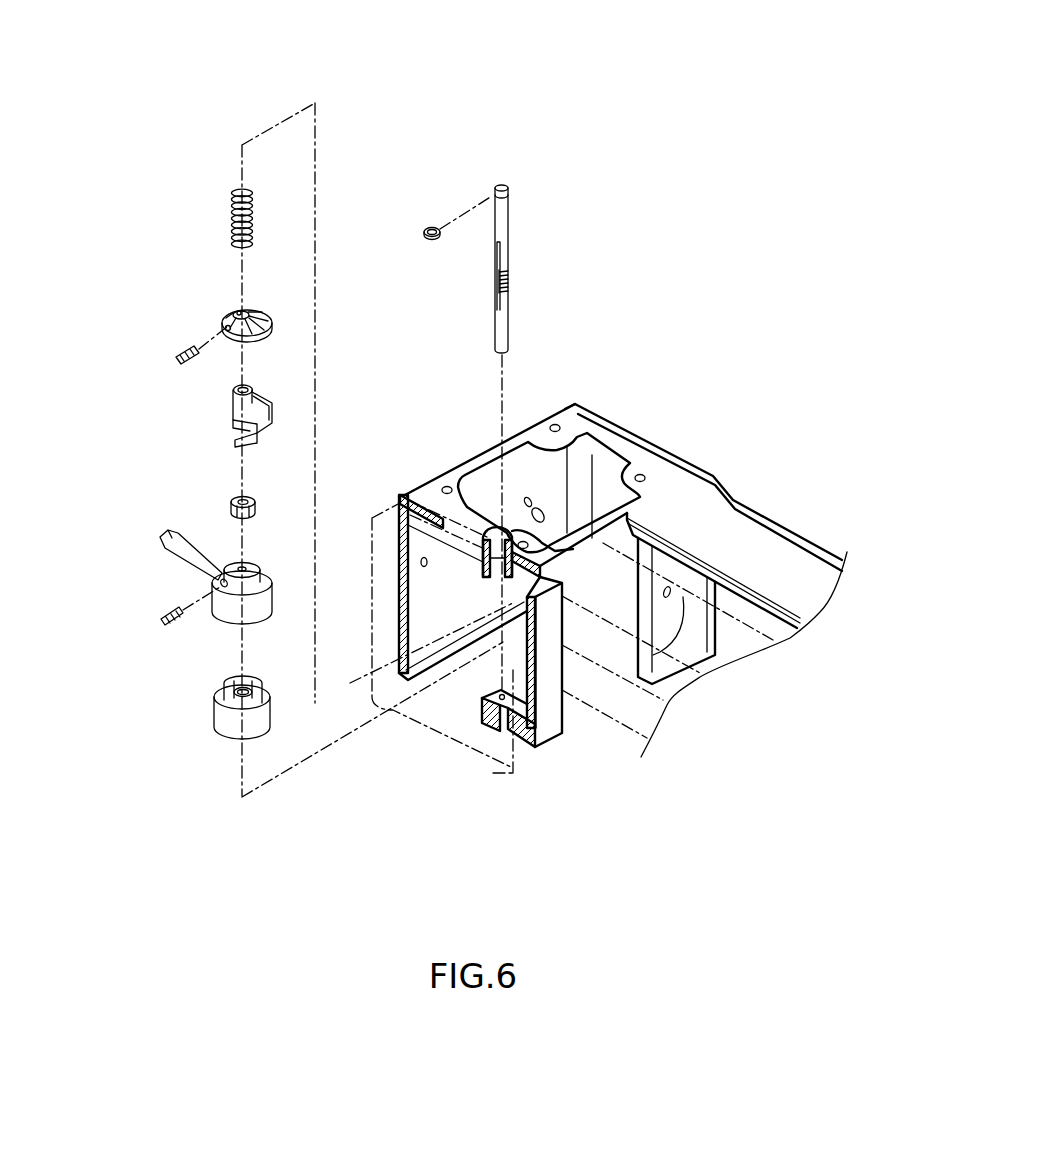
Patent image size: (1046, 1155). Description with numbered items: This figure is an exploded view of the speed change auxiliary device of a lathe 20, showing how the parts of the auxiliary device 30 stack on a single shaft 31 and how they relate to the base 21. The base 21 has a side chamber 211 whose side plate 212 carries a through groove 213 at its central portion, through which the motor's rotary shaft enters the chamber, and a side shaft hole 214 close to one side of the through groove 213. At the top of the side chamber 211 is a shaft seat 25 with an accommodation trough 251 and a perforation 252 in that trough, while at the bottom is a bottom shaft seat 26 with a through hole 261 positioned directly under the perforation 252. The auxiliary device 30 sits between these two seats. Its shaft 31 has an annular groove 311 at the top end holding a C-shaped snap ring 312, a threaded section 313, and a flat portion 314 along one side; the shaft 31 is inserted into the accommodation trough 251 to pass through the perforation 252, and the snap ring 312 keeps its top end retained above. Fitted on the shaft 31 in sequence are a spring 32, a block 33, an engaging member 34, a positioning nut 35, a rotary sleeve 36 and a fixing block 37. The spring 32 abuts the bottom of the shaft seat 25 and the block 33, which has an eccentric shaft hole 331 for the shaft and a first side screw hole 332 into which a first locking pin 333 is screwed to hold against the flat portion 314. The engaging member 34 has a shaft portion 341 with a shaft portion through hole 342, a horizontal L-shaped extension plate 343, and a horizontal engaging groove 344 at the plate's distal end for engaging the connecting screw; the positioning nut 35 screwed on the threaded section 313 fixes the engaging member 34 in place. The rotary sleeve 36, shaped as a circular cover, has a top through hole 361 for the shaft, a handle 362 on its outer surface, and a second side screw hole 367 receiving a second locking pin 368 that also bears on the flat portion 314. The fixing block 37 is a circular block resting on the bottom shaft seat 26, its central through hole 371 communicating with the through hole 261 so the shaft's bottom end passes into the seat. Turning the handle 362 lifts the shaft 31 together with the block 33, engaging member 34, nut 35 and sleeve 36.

The lathe 20 is at (637, 297).
The base 21 is at (655, 448).
The side chamber 211 is at (600, 482).
The side plate 212 is at (550, 728).
The through groove 213 is at (610, 653).
The side shaft hole 214 is at (668, 590).
The shaft seat 25 is at (512, 533).
The accommodation trough 251 is at (488, 565).
The perforation 252 is at (491, 559).
The bottom shaft seat 26 is at (483, 718).
The through hole 261 is at (501, 730).
The auxiliary device 30 is at (443, 18).
The shaft 31 is at (508, 218).
The annular groove 311 is at (508, 196).
The C-shaped snap ring 312 is at (434, 228).
The threaded section 313 is at (508, 283).
The flat portion 314 is at (498, 253).
The spring 32 is at (232, 214).
The block 33 is at (262, 314).
The eccentric shaft hole 331 is at (238, 313).
The first side screw hole 332 is at (228, 325).
The first locking pin 333 is at (172, 352).
The engaging member 34 is at (262, 392).
The shaft portion 341 is at (235, 407).
The shaft portion through hole 342 is at (235, 389).
The extension plate 343 is at (268, 413).
The engaging groove 344 is at (235, 430).
The positioning nut 35 is at (253, 502).
The rotary sleeve 36 is at (257, 608).
The top through hole 361 is at (244, 567).
The handle 362 is at (172, 555).
The second side screw hole 367 is at (212, 584).
The second locking pin 368 is at (162, 618).
The fixing block 37 is at (233, 722).
The central through hole 371 is at (228, 692).